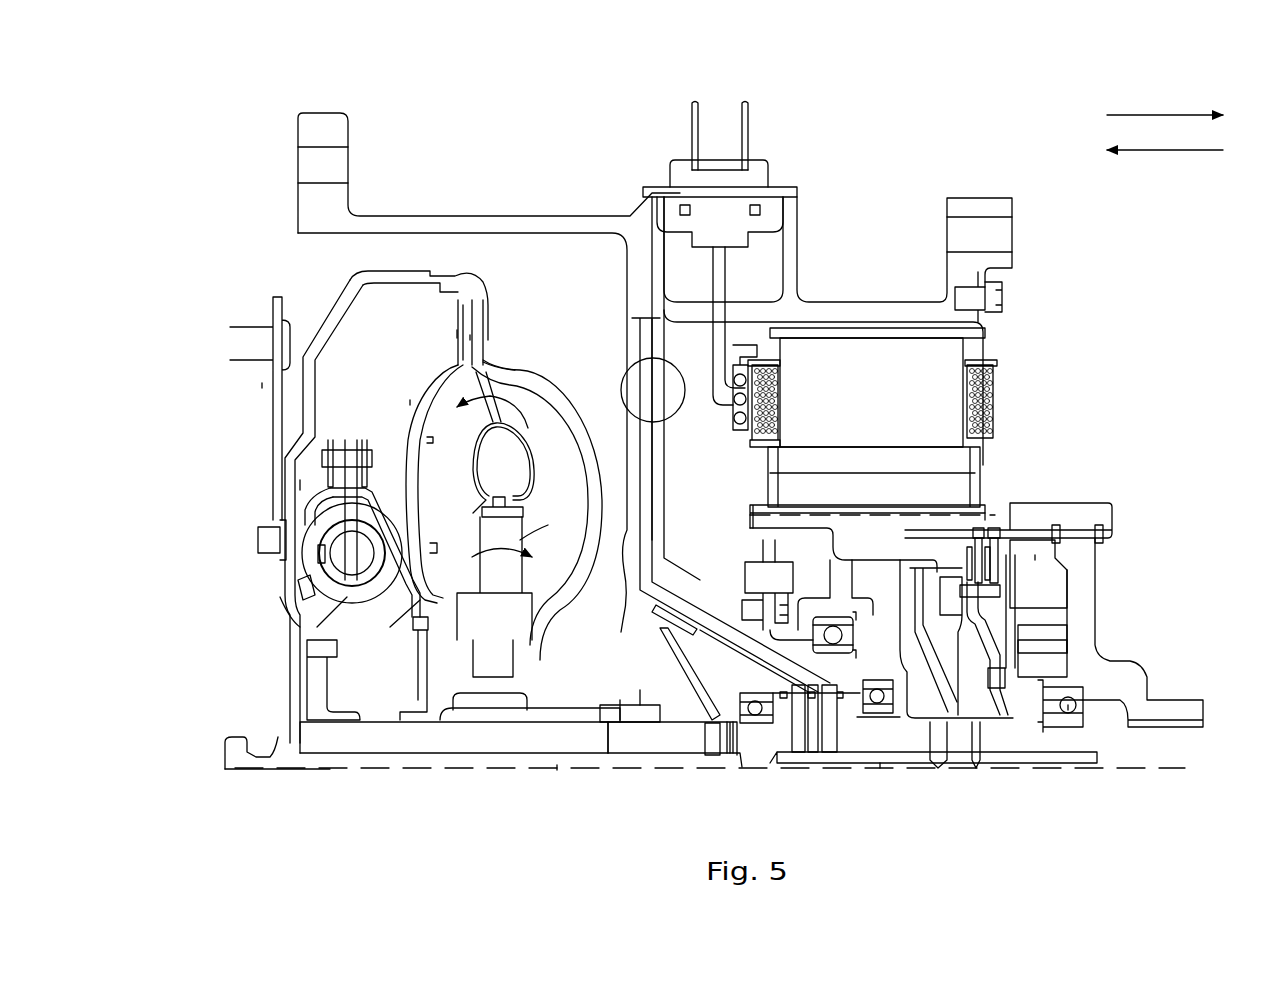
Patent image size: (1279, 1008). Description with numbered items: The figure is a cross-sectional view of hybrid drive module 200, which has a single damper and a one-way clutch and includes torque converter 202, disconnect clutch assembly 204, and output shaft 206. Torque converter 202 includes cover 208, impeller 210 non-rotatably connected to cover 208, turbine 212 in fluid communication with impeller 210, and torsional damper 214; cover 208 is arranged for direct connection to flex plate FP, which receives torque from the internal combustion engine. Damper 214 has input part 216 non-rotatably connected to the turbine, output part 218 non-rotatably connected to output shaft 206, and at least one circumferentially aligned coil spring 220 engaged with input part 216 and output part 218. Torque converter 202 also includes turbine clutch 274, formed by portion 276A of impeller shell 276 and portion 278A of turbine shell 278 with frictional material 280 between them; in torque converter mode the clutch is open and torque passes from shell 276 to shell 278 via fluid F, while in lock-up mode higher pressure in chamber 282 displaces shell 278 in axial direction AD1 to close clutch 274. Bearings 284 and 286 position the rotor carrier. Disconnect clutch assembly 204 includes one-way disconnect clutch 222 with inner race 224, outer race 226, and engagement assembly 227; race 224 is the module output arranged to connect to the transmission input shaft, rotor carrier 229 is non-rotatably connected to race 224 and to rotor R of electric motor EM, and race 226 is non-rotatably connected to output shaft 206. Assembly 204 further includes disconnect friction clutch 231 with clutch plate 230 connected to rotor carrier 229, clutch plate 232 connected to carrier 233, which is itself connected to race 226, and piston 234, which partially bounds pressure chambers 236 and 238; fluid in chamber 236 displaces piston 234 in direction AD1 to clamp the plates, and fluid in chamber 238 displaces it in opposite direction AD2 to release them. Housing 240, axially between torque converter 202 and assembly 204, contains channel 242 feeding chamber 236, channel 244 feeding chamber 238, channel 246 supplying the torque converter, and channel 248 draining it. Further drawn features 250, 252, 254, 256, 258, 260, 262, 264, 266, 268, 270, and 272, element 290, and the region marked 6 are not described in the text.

The hybrid drive module 200 is at (808, 150).
The torque converter 202 is at (312, 292).
The disconnect clutch assembly 204 is at (1035, 557).
The output shaft 206 is at (557, 768).
The cover 208 is at (353, 280).
The impeller 210 is at (530, 591).
The turbine 212 is at (483, 444).
The torsional damper 214 is at (305, 485).
The input part 216 is at (413, 592).
The output part 218 is at (320, 693).
The coil spring 220 is at (305, 553).
The one-way disconnect clutch 222 is at (1030, 553).
The inner race 224 is at (1148, 678).
The outer race 226 is at (1067, 607).
The engagement assembly 227 is at (1045, 640).
The rotor carrier 229 is at (1112, 520).
The clutch plate 230 is at (990, 530).
The disconnect friction clutch 231 is at (990, 513).
The clutch plate 232 is at (1000, 600).
The carrier 233 is at (1040, 690).
The piston 234 is at (957, 690).
The pressure chamber 236 is at (927, 687).
The pressure chamber 238 is at (1007, 700).
The housing 240 is at (645, 300).
The channel 242 is at (678, 612).
The channel 244 is at (700, 640).
The channel 246 is at (690, 680).
The channel 248 is at (623, 723).
The shaft housing 250 is at (885, 762).
The clutch plate 252 is at (837, 693).
The fastener 254 is at (943, 672).
The hub 256 is at (810, 757).
The clutch plate 258 is at (797, 693).
The spring 260 is at (965, 688).
The base 262 is at (357, 770).
The hub 264 is at (717, 727).
The end block 266 is at (305, 755).
The seam 268 is at (608, 725).
The wall 270 is at (643, 680).
The plate 272 is at (453, 727).
The turbine clutch 274 is at (455, 333).
The impeller shell 276 is at (535, 362).
The portion of impeller shell 276A is at (488, 332).
The turbine shell 278 is at (412, 400).
The portion of turbine shell 278A is at (457, 348).
The frictional material 280 is at (470, 330).
The chamber 282 is at (427, 397).
The bearing 284 is at (835, 617).
The bearing 286 is at (1068, 713).
The housing 290 is at (631, 459).
The detail circle 6 is at (643, 448).
The fluid F is at (508, 476).
The flex plate FP is at (262, 385).
The electric motor EM is at (865, 387).
The rotor R is at (847, 463).
The axial direction AD1 is at (1143, 113).
The opposite axial direction AD2 is at (1163, 150).